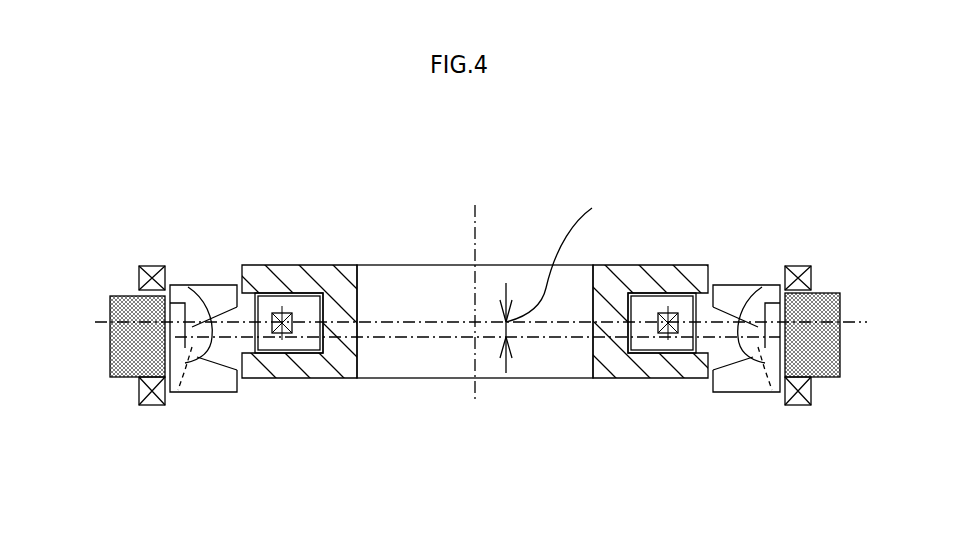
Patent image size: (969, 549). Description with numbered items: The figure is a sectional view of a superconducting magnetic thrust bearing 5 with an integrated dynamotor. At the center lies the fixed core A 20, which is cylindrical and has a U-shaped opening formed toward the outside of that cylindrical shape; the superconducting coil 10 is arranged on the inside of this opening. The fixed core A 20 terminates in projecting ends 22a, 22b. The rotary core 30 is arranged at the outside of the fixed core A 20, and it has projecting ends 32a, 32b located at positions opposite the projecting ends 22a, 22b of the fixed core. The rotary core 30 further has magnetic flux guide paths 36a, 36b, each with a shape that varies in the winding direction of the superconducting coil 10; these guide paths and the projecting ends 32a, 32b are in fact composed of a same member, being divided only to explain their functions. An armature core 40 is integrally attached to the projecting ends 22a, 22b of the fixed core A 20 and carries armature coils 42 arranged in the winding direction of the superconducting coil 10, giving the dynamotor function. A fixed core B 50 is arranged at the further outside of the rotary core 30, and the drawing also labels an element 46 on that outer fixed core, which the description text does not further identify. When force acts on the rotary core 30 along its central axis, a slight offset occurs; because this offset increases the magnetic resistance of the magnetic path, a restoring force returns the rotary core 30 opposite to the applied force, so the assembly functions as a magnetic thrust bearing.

The superconducting magnetic thrust bearing 5 is at (505, 200).
The superconducting coil 10 is at (282, 293).
The fixed core A 20 is at (312, 265).
The projecting end 22a is at (240, 292).
The projecting end 22b is at (238, 382).
The rotary core 30 is at (204, 393).
The projecting end 32a is at (228, 295).
The projecting end 32b is at (222, 378).
The magnetic flux guide path 36a is at (200, 320).
The magnetic flux guide path 36b is at (185, 370).
The armature core 40 is at (123, 297).
The armature coil 42 is at (152, 266).
The magnet 46 is at (152, 358).
The fixed core B 50 is at (110, 355).